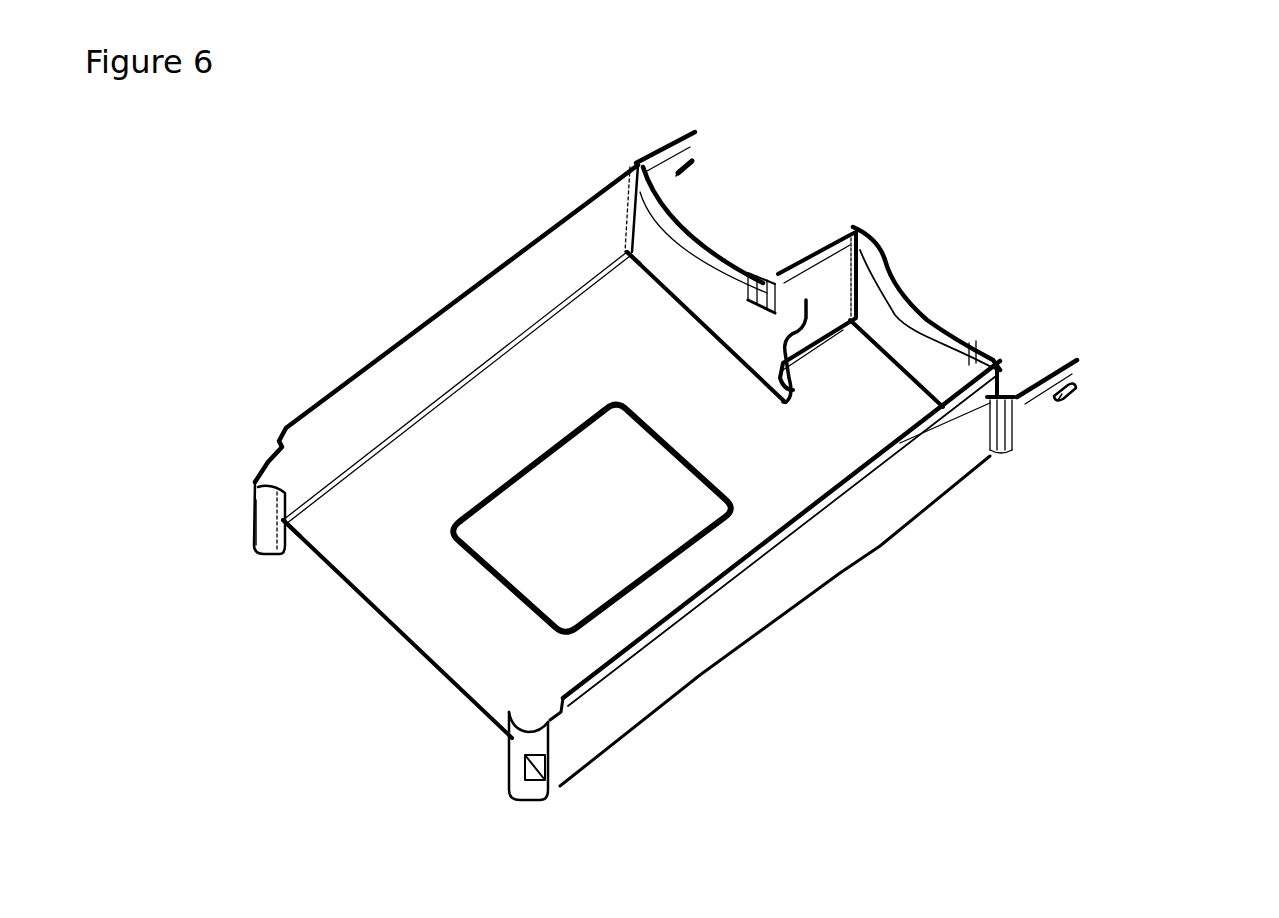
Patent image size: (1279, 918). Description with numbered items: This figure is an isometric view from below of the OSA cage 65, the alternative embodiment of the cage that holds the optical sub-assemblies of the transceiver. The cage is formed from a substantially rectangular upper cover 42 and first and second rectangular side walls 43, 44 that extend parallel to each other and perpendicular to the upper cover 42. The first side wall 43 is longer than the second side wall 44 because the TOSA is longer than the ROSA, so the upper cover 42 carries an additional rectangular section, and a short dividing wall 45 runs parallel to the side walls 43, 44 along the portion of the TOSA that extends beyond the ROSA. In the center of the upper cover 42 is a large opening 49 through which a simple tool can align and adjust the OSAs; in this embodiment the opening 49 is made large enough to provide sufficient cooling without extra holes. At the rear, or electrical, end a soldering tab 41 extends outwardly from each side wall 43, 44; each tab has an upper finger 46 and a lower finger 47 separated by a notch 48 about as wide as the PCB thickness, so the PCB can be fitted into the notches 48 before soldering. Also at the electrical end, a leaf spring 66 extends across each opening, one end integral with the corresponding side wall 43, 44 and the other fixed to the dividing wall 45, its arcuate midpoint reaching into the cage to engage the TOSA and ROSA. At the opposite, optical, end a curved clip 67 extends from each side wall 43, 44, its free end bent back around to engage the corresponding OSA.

The soldering tab 41 is at (268, 437).
The upper cover 42 is at (374, 528).
The first side wall 43 is at (802, 565).
The second side wall 44 is at (452, 352).
The dividing wall 45 is at (812, 312).
The upper finger 46 is at (697, 169).
The lower finger 47 is at (693, 136).
The notch 48 is at (700, 148).
The opening 49 is at (578, 528).
The OSA cage 65 is at (498, 186).
The leaf spring 66 is at (713, 257).
The curved clip 67 is at (256, 556).